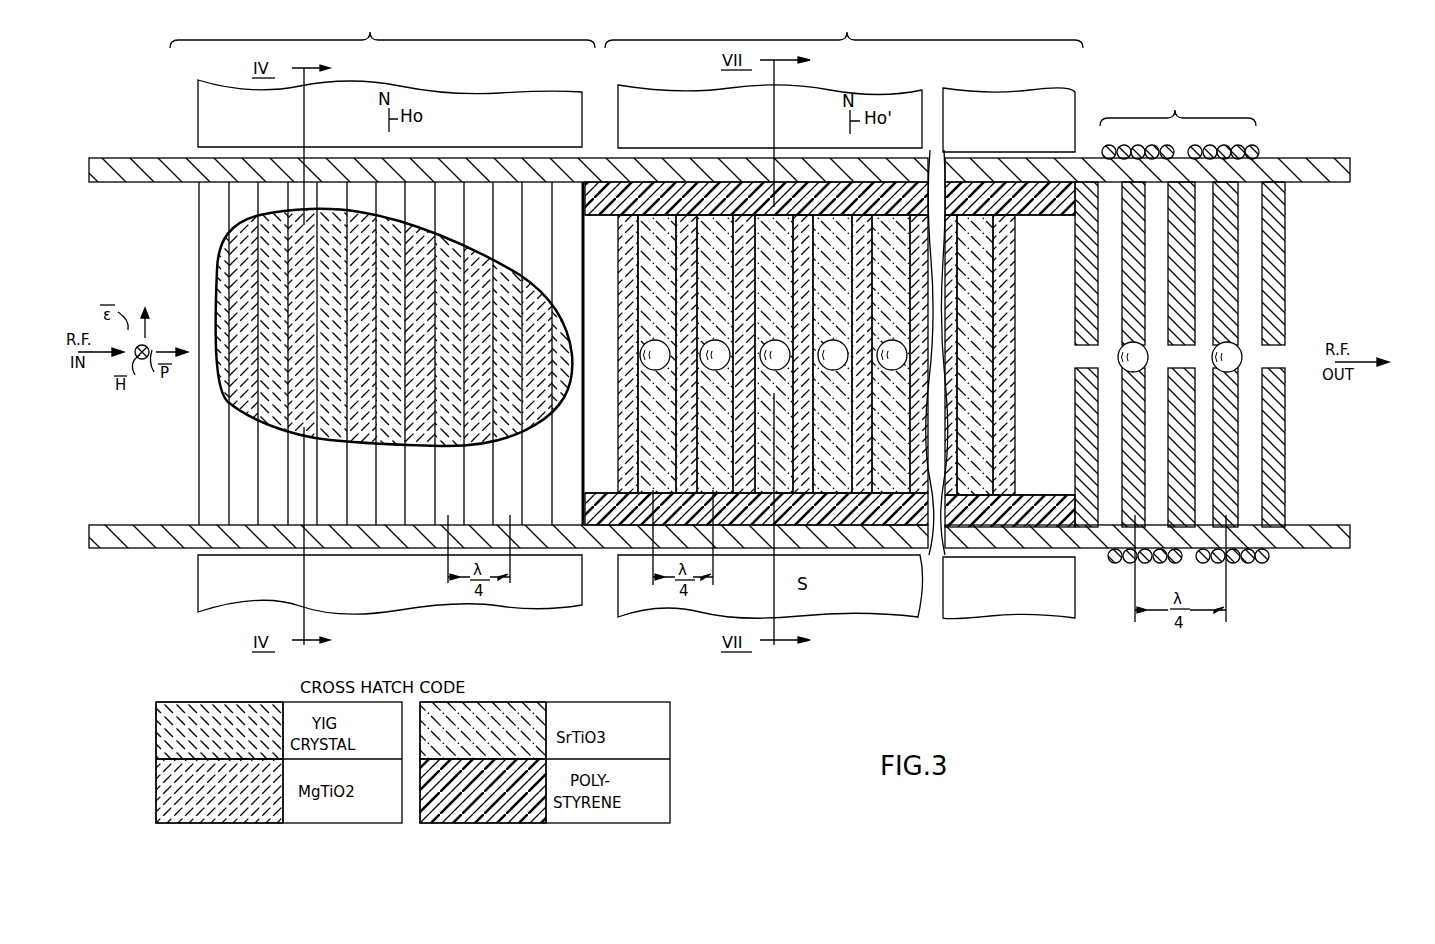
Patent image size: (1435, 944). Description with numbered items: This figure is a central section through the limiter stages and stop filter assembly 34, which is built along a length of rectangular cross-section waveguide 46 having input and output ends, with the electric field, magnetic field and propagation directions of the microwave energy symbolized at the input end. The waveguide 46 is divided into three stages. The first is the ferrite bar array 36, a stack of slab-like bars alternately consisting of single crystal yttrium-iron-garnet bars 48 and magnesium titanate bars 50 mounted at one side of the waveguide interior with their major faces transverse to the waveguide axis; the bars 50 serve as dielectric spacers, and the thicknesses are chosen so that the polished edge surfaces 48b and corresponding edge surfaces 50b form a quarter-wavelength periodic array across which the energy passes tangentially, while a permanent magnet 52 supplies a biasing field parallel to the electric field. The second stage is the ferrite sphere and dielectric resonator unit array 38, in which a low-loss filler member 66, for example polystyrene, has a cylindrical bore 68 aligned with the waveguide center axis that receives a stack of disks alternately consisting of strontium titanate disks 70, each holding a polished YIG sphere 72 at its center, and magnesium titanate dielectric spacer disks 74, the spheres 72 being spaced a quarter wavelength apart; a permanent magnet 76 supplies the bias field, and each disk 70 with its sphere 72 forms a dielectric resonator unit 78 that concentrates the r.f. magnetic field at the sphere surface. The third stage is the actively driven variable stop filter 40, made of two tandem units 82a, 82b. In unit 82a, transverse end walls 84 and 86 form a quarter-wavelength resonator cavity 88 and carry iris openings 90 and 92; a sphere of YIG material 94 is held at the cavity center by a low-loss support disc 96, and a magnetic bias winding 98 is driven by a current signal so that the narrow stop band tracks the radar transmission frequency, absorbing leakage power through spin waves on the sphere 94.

The limiter stages and stop filter assembly 34 is at (166, 110).
The ferrite bar array 36 is at (382, 266).
The ferrite sphere and dielectric resonator unit array 38 is at (834, 251).
The ferrite sphere in cavity variable stop filter 40 is at (1178, 107).
The rectangular cross-section waveguide 46 is at (112, 160).
The yttrium-iron-garnet bars 48 is at (240, 262).
The edge surfaces of YIG bars 48b is at (532, 182).
The magnesium titanate bars 50 is at (262, 253).
The edge surfaces of dielectric spacer bars 50b is at (565, 188).
The permanent magnet 52 is at (198, 131).
The filler member 66 is at (662, 188).
The cylindrical bore 68 is at (609, 477).
The strontium titanate disks 70 is at (632, 413).
The YIG sphere 72 is at (640, 355).
The dielectric spacer disks 74 is at (630, 440).
The permanent magnet 76 is at (667, 96).
The dielectric resonator unit 78 is at (668, 275).
The first variable stop filter unit 82a is at (1160, 136).
The second variable stop filter unit 82b is at (1248, 136).
The transverse end wall 84 is at (1085, 262).
The transverse end wall 86 is at (1185, 250).
The resonator cavity 88 is at (1110, 292).
The iris opening 90 is at (1086, 346).
The iris opening 92 is at (1188, 343).
The sphere of YIG material 94 is at (1118, 360).
The support disc 96 is at (1132, 448).
The magnetic bias winding 98 is at (1110, 148).